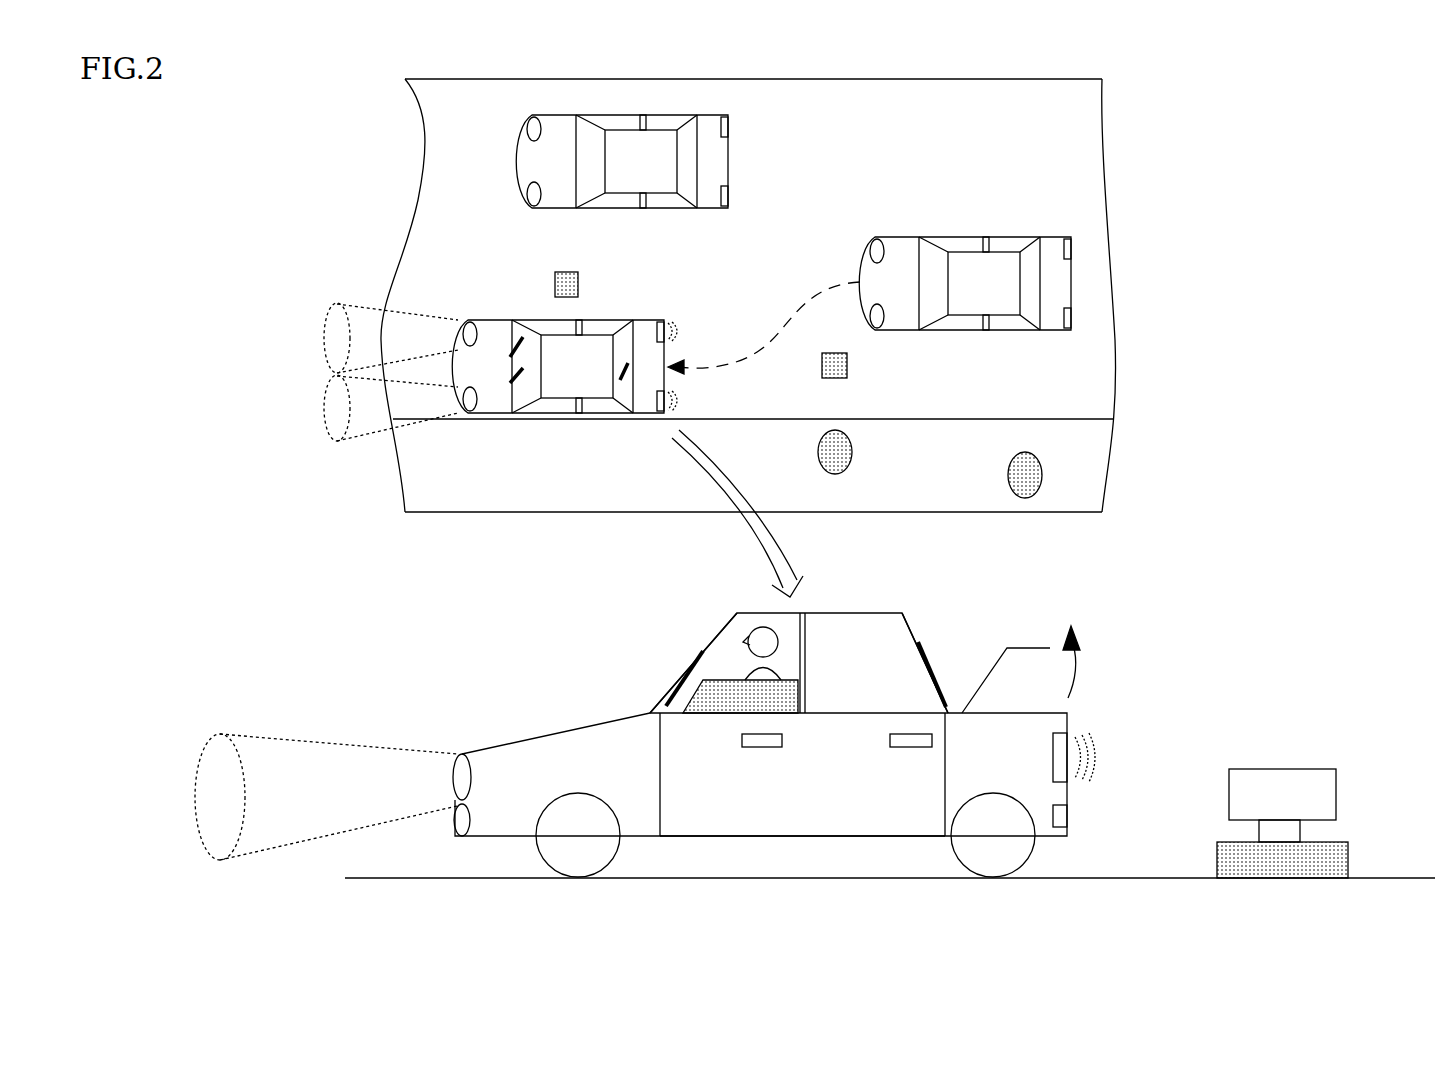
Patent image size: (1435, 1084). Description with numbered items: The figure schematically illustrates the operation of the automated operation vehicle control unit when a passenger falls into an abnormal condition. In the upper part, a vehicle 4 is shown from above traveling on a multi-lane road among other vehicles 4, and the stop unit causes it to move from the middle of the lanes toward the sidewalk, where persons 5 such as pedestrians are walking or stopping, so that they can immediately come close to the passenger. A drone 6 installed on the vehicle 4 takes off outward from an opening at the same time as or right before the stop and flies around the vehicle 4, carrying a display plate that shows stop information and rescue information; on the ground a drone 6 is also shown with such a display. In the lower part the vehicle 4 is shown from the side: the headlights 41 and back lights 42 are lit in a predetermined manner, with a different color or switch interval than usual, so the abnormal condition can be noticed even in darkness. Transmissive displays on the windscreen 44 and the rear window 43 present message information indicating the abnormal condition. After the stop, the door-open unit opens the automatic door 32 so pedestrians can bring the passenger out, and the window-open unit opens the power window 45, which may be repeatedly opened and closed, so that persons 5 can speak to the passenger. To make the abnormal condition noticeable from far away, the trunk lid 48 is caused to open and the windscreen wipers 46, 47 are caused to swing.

The vehicle 4 is at (729, 163).
The person at a periphery of the vehicle 5 is at (853, 453).
The drone 6 is at (571, 272).
The automatic door 32 is at (752, 803).
The headlights 41 is at (455, 768).
The back lights 42 is at (669, 322).
The rear window 43 is at (913, 631).
The windscreen 44 is at (705, 650).
The power window 45 is at (700, 700).
The windscreen wiper 46 is at (937, 673).
The windscreen wiper 47 is at (665, 701).
The trunk lid 48 is at (1018, 645).